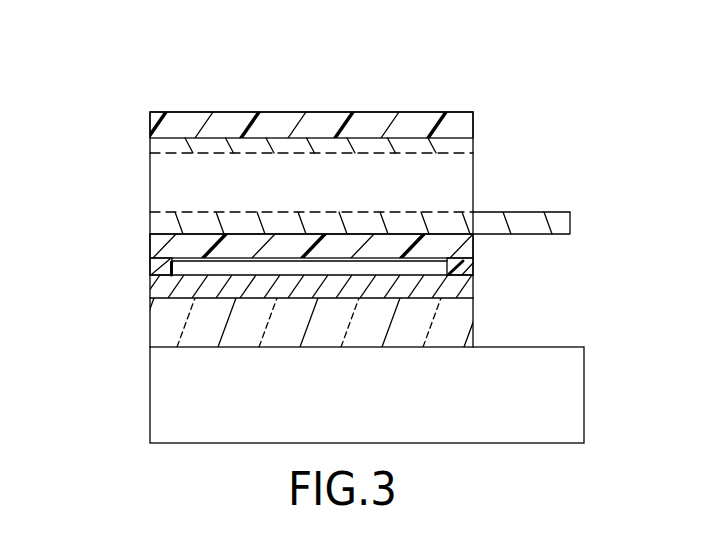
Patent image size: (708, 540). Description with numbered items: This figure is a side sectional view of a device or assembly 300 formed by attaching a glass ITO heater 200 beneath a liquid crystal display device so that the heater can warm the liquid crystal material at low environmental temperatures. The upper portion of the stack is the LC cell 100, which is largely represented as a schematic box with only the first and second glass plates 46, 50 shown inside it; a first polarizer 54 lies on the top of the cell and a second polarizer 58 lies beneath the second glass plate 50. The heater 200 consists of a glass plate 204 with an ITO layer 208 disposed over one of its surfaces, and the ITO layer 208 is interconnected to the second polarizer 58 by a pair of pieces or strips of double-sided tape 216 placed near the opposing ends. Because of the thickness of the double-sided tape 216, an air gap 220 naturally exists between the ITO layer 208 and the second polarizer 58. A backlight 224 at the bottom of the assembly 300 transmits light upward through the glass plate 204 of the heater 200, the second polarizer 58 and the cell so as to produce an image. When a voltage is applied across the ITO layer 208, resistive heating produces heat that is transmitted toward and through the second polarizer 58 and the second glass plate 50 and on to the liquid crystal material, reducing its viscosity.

The assembly 300 is at (130, 73).
The LC cell 100 is at (134, 172).
The first polarizer 54 is at (473, 124).
The first glass plate 46 is at (150, 141).
The second glass plate 50 is at (150, 223).
The second polarizer 58 is at (473, 246).
The glass ITO heater 200 is at (498, 316).
The double-sided tape 216 is at (150, 271).
The air gap 220 is at (410, 271).
The ITO layer 208 is at (150, 292).
The glass plate 204 is at (150, 330).
The backlight 224 is at (150, 380).